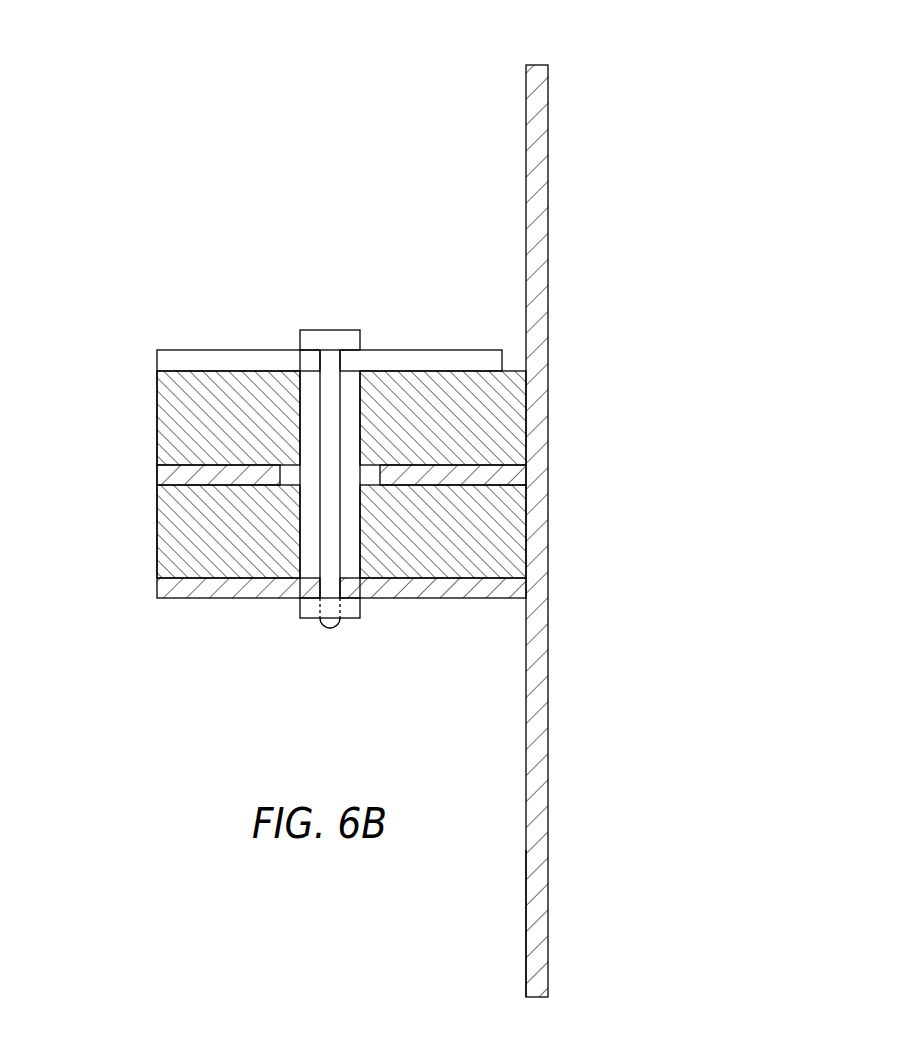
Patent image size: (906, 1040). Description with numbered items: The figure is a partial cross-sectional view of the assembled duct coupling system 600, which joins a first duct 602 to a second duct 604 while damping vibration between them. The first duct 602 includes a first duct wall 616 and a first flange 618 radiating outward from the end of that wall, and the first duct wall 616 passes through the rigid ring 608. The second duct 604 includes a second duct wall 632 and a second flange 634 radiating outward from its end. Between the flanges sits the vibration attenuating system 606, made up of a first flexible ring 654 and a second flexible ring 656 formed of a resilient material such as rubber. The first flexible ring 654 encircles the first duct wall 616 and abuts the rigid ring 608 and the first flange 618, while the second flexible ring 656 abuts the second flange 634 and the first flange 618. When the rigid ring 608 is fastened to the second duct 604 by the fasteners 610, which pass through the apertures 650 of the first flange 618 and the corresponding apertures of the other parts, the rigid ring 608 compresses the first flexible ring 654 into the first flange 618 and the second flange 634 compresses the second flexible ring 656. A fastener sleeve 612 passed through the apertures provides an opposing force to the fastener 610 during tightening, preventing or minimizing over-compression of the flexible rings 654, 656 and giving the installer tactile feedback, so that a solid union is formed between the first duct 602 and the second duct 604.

The duct coupling system 600 is at (700, 107).
The first duct 602 is at (614, 272).
The second duct 604 is at (647, 801).
The vibration attenuating system 606 is at (140, 419).
The rigid ring 608 is at (170, 350).
The fastener 610 is at (335, 330).
The fastener sleeve 612 is at (310, 392).
The first duct wall 616 is at (548, 176).
The first flange 618 is at (162, 477).
The second duct wall 632 is at (549, 878).
The second flange 634 is at (187, 599).
The apertures of the first flange 650 is at (286, 444).
The first flexible ring 654 is at (180, 420).
The second flexible ring 656 is at (163, 528).